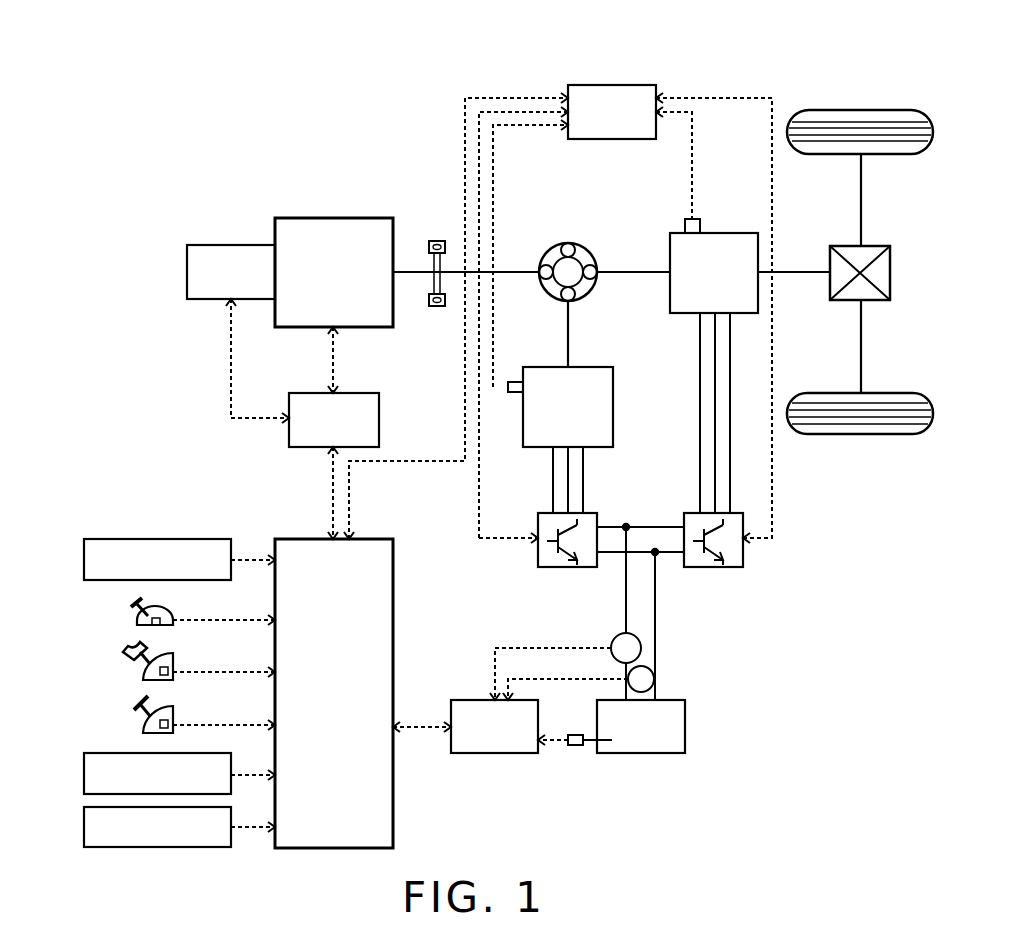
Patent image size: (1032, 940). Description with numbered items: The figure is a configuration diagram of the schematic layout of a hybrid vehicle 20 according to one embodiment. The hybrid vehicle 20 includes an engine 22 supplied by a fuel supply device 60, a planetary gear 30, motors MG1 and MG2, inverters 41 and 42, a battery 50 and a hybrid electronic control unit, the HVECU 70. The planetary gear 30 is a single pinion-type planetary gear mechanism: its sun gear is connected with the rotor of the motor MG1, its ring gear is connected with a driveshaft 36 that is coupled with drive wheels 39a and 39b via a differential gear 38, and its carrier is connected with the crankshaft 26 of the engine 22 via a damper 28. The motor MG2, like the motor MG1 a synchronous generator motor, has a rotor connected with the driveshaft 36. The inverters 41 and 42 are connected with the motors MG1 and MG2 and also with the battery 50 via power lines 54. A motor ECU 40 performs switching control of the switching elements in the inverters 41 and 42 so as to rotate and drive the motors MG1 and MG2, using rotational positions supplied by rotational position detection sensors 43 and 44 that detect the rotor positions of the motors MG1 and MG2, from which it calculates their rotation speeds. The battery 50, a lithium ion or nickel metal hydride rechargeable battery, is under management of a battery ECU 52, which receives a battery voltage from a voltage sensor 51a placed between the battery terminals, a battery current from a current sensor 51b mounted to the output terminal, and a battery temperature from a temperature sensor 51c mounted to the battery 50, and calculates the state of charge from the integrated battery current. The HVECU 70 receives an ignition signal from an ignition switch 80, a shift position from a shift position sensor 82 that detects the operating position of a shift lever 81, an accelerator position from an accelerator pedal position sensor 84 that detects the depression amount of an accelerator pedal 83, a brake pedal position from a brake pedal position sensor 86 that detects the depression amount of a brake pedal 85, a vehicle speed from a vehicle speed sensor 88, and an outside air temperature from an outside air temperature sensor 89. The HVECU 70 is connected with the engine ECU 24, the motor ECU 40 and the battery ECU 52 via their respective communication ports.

The hybrid vehicle 20 is at (757, 58).
The engine 22 is at (377, 218).
The engine ECU 24 is at (356, 393).
The crankshaft 26 is at (407, 270).
The damper 28 is at (436, 240).
The planetary gear 30 is at (568, 243).
The driveshaft 36 is at (803, 270).
The differential gear 38 is at (872, 245).
The drive wheel 39a is at (861, 110).
The drive wheel 39b is at (860, 434).
The motor ECU 40 is at (625, 84).
The inverter 41 is at (588, 513).
The inverter 42 is at (735, 513).
The rotational position detection sensor 43 is at (515, 382).
The rotational position detection sensor 44 is at (687, 218).
The battery 50 is at (685, 722).
The voltage sensor 51a is at (654, 679).
The current sensor 51b is at (641, 648).
The temperature sensor 51c is at (575, 745).
The battery ECU 52 is at (472, 698).
The power lines 54 is at (626, 588).
The fuel supply device 60 is at (230, 245).
The HVECU 70 is at (362, 538).
The ignition switch 80 is at (84, 559).
The shift lever 81 is at (137, 606).
The shift position sensor 82 is at (143, 620).
The accelerator pedal 83 is at (125, 660).
The accelerator pedal position sensor 84 is at (150, 672).
The brake pedal 85 is at (140, 712).
The brake pedal position sensor 86 is at (150, 725).
The vehicle speed sensor 88 is at (84, 773).
The outside air temperature sensor 89 is at (84, 826).
The motor MG1 is at (595, 363).
The motor MG2 is at (728, 232).